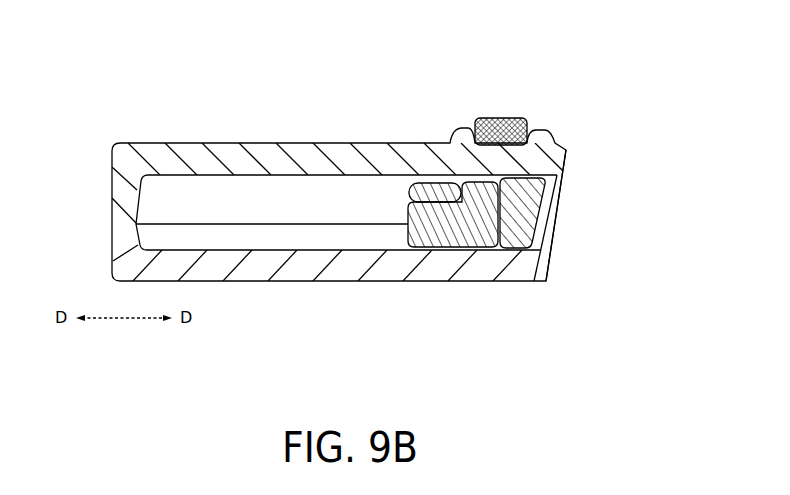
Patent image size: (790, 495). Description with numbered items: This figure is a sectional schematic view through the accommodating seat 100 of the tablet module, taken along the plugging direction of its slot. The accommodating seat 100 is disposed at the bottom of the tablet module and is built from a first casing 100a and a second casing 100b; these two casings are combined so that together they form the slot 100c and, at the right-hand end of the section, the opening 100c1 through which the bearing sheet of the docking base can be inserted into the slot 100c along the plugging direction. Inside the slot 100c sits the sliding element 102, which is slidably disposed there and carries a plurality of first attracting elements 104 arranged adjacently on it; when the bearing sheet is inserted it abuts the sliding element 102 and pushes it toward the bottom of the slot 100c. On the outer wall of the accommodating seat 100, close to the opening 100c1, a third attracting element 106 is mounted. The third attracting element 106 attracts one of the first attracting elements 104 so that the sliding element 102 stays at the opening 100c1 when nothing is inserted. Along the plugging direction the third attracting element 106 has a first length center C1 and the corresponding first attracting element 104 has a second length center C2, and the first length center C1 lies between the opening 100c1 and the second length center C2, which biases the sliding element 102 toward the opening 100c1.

The accommodating seat 100 is at (186, 112).
The first casing 100a is at (297, 268).
The second casing 100b is at (304, 155).
The slot 100c is at (363, 240).
The opening 100c1 is at (560, 212).
The sliding element 102 is at (528, 222).
The first attracting element 104 is at (447, 250).
The third attracting element 106 is at (490, 120).
The first length center C1 is at (508, 126).
The second length center C2 is at (463, 231).